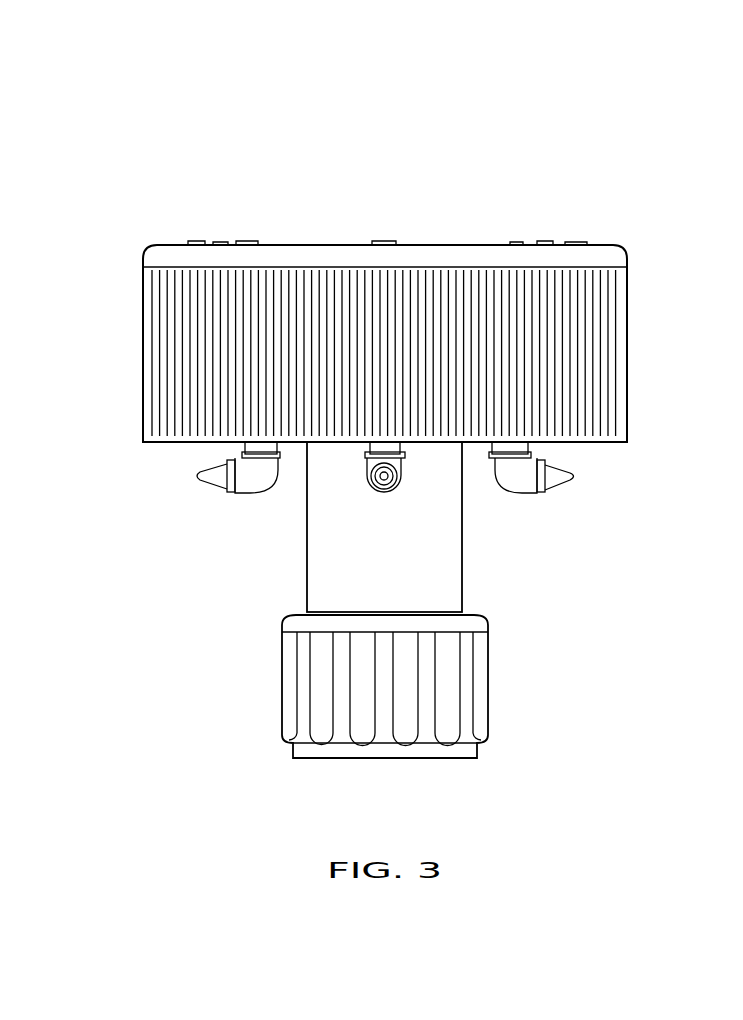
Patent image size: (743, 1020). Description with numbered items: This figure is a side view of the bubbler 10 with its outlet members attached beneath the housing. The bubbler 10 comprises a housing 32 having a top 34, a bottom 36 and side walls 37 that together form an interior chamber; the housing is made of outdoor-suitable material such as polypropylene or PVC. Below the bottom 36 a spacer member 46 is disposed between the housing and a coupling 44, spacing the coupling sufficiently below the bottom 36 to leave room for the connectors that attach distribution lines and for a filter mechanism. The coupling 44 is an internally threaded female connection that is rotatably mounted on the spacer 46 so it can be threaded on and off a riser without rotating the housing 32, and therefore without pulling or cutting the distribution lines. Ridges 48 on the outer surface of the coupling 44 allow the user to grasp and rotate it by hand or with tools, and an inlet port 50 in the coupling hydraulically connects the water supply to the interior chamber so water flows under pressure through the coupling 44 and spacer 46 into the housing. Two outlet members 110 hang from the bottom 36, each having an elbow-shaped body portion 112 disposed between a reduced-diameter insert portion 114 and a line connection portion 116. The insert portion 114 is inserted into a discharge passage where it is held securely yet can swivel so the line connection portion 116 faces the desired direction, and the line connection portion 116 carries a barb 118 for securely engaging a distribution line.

The bubbler 10 is at (490, 137).
The housing 32 is at (595, 396).
The top 34 is at (275, 236).
The side walls 37 is at (592, 300).
The bottom 36 is at (477, 447).
The spacer member 46 is at (328, 527).
The coupling 44 is at (393, 714).
The ridges 48 is at (283, 702).
The inlet port 50 is at (467, 766).
The outlet member 110 is at (588, 504).
The body portion 112 is at (196, 478).
The insert portion 114 is at (245, 447).
The line connection portion 116 is at (576, 483).
The barb 118 is at (540, 494).